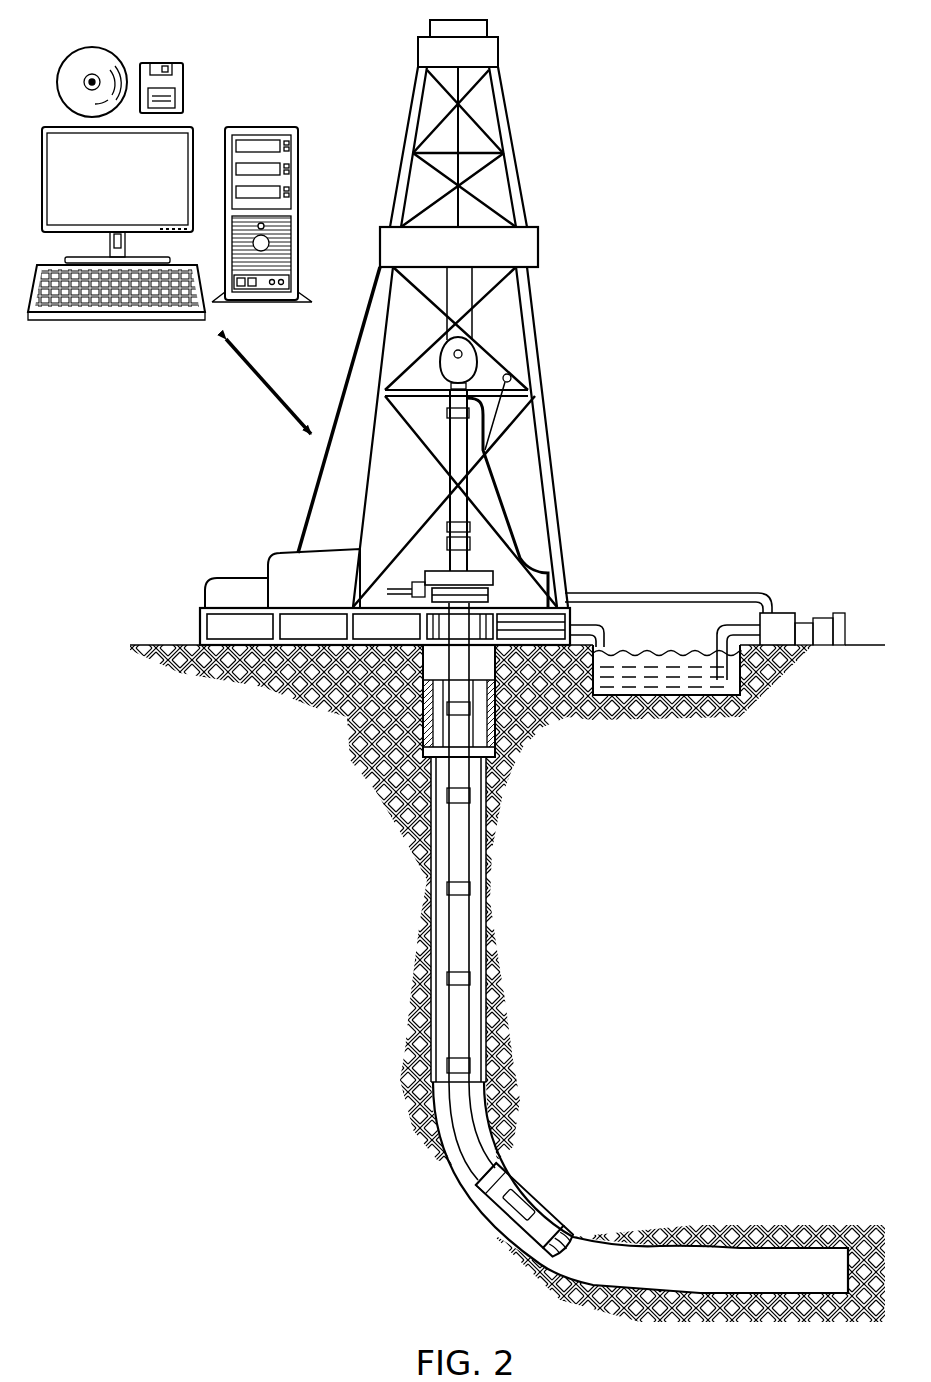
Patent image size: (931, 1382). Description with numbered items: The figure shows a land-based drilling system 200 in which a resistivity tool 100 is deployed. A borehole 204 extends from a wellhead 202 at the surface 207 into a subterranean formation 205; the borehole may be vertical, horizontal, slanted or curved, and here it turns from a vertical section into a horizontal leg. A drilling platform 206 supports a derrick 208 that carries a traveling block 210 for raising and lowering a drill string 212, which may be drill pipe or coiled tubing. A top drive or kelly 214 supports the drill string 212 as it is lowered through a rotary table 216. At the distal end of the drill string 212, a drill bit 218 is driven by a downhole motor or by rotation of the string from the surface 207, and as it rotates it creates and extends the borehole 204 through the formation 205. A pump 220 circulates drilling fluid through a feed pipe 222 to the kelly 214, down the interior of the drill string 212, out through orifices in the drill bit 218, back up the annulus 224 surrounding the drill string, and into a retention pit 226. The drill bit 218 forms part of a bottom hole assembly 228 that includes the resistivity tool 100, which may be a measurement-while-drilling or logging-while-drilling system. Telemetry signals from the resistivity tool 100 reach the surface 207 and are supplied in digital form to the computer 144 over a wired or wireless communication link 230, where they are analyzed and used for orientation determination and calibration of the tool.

The resistivity tool 100 is at (517, 1178).
The computer 144 is at (240, 88).
The drilling system 200 is at (733, 73).
The wellhead 202 is at (502, 596).
The borehole 204 is at (478, 911).
The subterranean formation 205 is at (731, 997).
The drilling platform 206 is at (202, 627).
The surface 207 is at (867, 645).
The derrick 208 is at (521, 193).
The traveling block 210 is at (440, 372).
The drill string 212 is at (468, 848).
The kelly 214 is at (447, 437).
The rotary table 216 is at (447, 557).
The drill bit 218 is at (575, 1250).
The pump 220 is at (787, 613).
The feed pipe 222 is at (660, 592).
The annulus 224 is at (430, 885).
The retention pit 226 is at (667, 690).
The bottom hole assembly 228 is at (470, 1187).
The communication link 230 is at (248, 375).